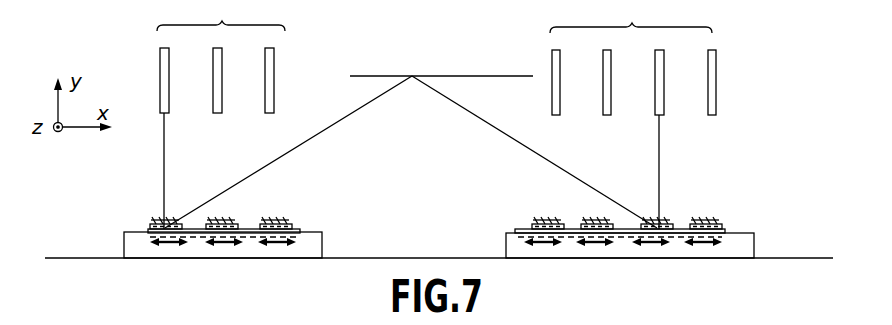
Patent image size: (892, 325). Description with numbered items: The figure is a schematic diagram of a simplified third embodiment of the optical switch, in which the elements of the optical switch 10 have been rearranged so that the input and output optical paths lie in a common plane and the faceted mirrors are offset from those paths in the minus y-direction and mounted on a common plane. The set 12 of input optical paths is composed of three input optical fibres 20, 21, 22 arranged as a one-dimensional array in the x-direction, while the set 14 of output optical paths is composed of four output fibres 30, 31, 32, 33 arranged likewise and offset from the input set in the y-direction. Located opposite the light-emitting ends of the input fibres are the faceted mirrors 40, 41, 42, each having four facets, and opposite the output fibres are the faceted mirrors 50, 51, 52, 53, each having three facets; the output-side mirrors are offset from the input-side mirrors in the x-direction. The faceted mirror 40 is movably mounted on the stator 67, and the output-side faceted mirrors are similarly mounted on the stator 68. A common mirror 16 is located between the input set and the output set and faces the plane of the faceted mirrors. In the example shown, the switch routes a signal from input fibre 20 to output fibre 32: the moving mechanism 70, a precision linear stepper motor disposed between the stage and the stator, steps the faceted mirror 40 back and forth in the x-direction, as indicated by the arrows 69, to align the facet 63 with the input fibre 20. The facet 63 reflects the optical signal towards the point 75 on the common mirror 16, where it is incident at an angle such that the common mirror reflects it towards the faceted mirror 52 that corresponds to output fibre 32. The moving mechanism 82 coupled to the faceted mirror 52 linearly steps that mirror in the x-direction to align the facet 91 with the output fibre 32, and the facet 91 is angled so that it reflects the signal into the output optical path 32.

The optical switch 10 is at (413, 184).
The set of input optical paths 12 is at (222, 23).
The set of output optical paths 14 is at (632, 25).
The common mirror 16 is at (450, 75).
The input optical fibre 20 is at (169, 76).
The input optical fibre 21 is at (222, 76).
The input optical fibre 22 is at (274, 76).
The output optical fibre 30 is at (560, 78).
The output optical fibre 31 is at (611, 78).
The output optical fibre 32 is at (664, 78).
The output optical fibre 33 is at (716, 78).
The faceted mirror 40 is at (148, 232).
The faceted mirror 41 is at (228, 226).
The faceted mirror 42 is at (282, 226).
The faceted mirror 50 is at (538, 227).
The faceted mirror 51 is at (590, 227).
The faceted mirror 52 is at (665, 227).
The faceted mirror 53 is at (720, 227).
The mirror facet 63 is at (162, 227).
The stator 67 is at (124, 245).
The stator 68 is at (506, 246).
The arrows 69 is at (168, 246).
The moving mechanism 70 is at (148, 236).
The point on common mirror 75 is at (412, 76).
The moving mechanism 82 is at (628, 236).
The mirror facet 91 is at (659, 229).